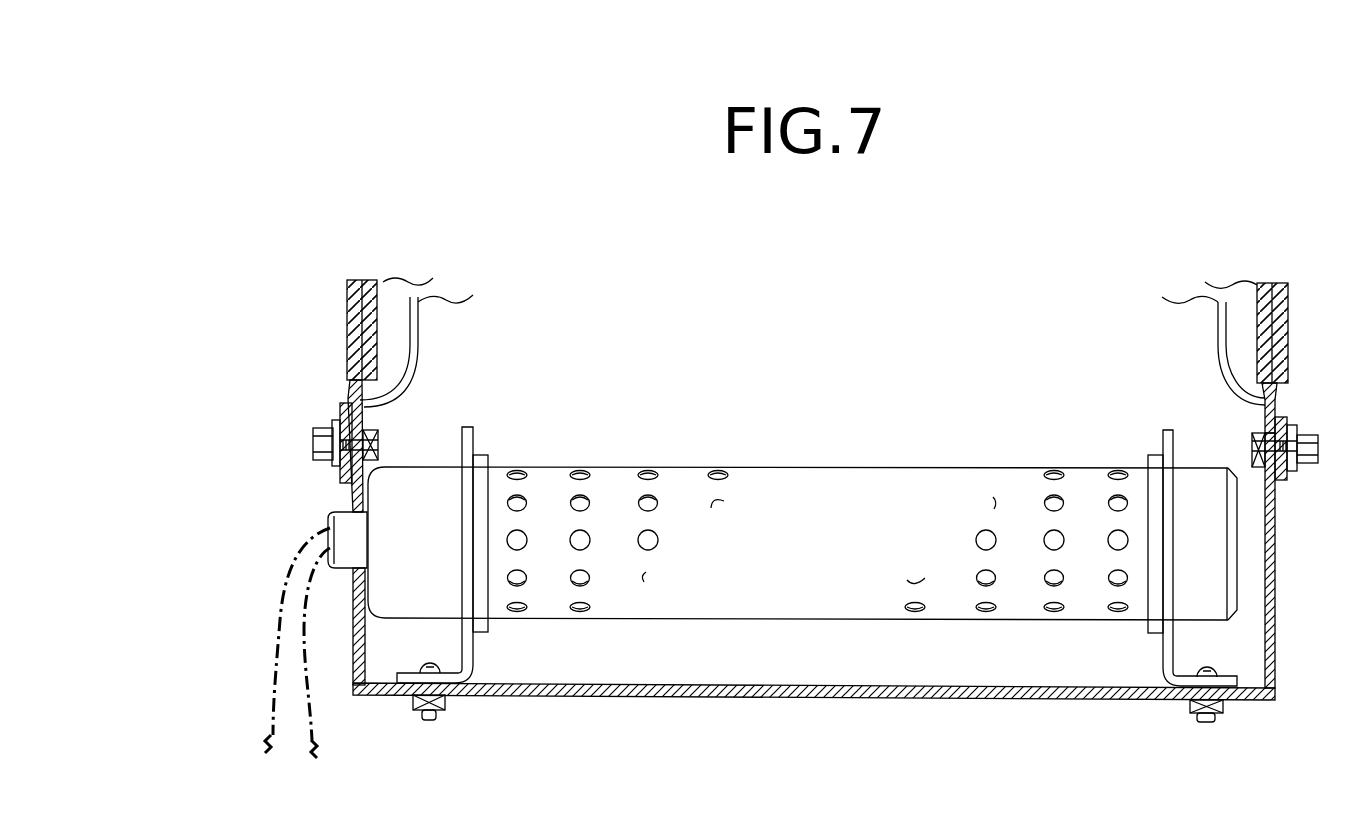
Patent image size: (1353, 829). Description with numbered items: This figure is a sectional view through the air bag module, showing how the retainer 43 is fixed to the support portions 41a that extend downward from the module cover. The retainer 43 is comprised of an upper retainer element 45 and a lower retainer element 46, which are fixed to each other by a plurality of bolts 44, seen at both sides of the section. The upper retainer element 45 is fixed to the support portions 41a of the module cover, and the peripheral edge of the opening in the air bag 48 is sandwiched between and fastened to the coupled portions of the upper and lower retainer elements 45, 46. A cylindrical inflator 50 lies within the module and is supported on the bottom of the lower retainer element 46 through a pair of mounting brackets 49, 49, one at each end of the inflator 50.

The support portions 41a is at (348, 317).
The retainer 43 is at (266, 363).
The bolts 44 is at (380, 445).
The upper retainer element 45 is at (352, 395).
The lower retainer element 46 is at (352, 495).
The air bag 48 is at (414, 327).
The mounting brackets 49 is at (476, 440).
The cylindrical inflator 50 is at (848, 456).